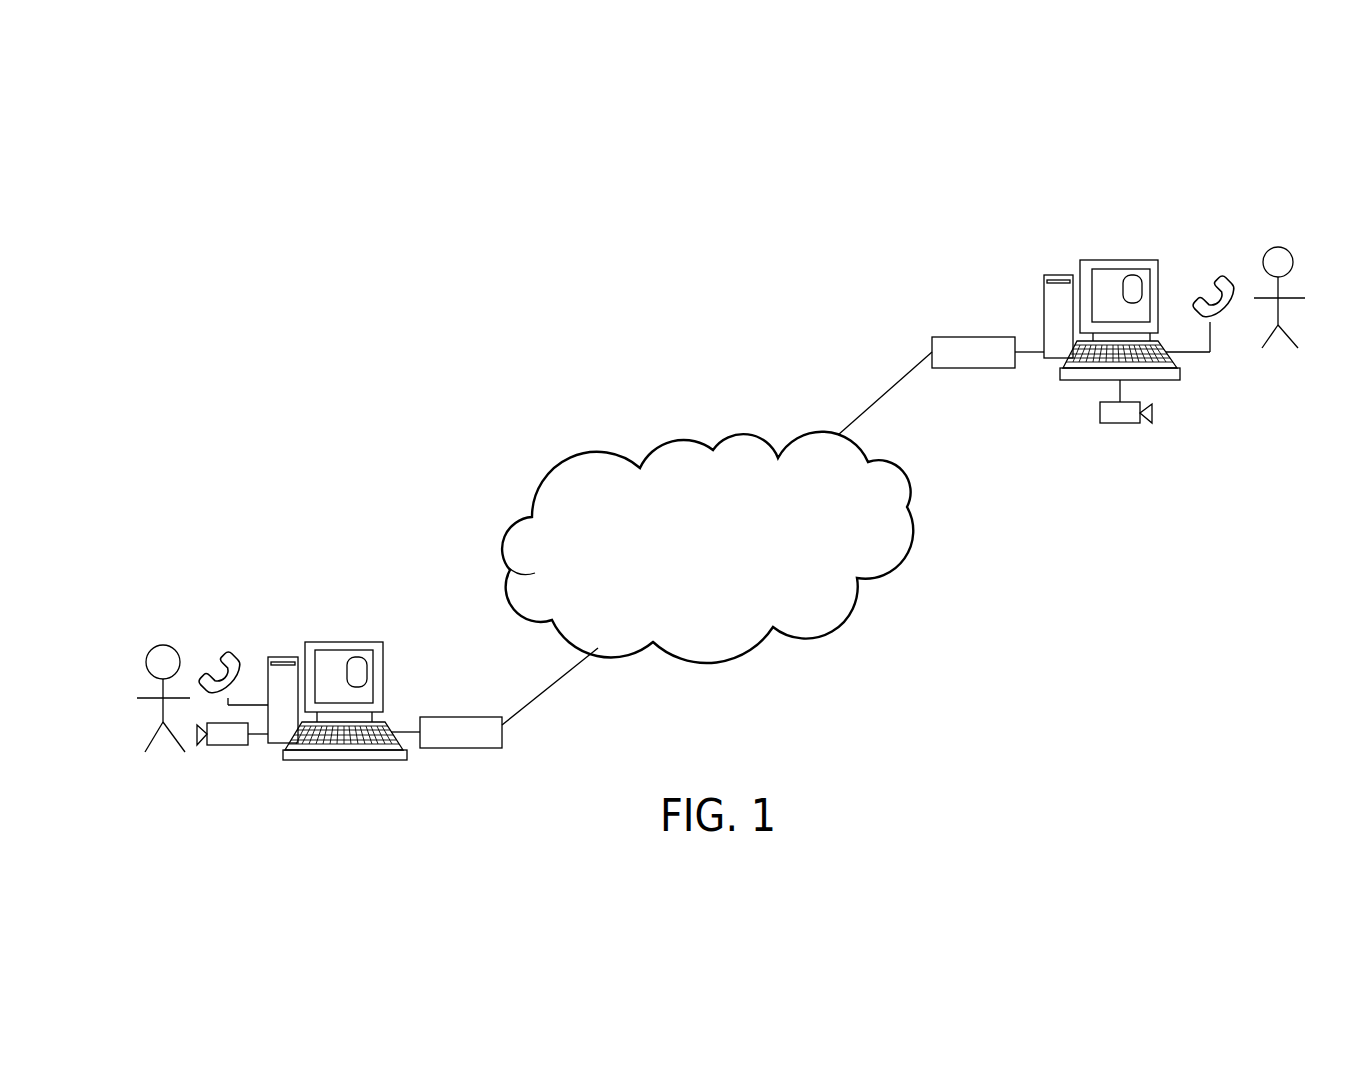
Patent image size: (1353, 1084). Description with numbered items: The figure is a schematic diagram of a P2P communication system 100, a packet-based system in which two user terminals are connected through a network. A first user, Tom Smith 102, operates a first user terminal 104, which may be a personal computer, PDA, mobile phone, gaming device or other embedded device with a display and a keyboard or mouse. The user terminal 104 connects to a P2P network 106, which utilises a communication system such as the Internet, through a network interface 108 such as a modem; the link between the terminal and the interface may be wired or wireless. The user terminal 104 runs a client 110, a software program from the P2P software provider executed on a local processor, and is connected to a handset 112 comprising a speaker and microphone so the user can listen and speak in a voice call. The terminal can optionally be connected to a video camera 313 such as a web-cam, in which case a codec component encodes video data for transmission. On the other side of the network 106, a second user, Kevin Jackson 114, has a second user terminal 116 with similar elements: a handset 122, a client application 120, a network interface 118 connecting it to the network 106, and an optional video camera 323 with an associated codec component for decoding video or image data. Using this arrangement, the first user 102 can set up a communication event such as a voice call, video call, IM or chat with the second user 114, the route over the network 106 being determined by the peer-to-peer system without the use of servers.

The P2P communication system 100 is at (548, 432).
The first user 102 is at (1278, 247).
The first user terminal 104 is at (1097, 258).
The P2P network 106 is at (862, 603).
The network interface 108 is at (975, 335).
The client 110 is at (1132, 275).
The handset 112 is at (1225, 275).
The second user 114 is at (163, 644).
The second user terminal 116 is at (320, 640).
The network interface 118 is at (462, 717).
The client application 120 is at (356, 657).
The handset 122 is at (226, 652).
The video camera 313 is at (1120, 424).
The video camera 323 is at (250, 745).